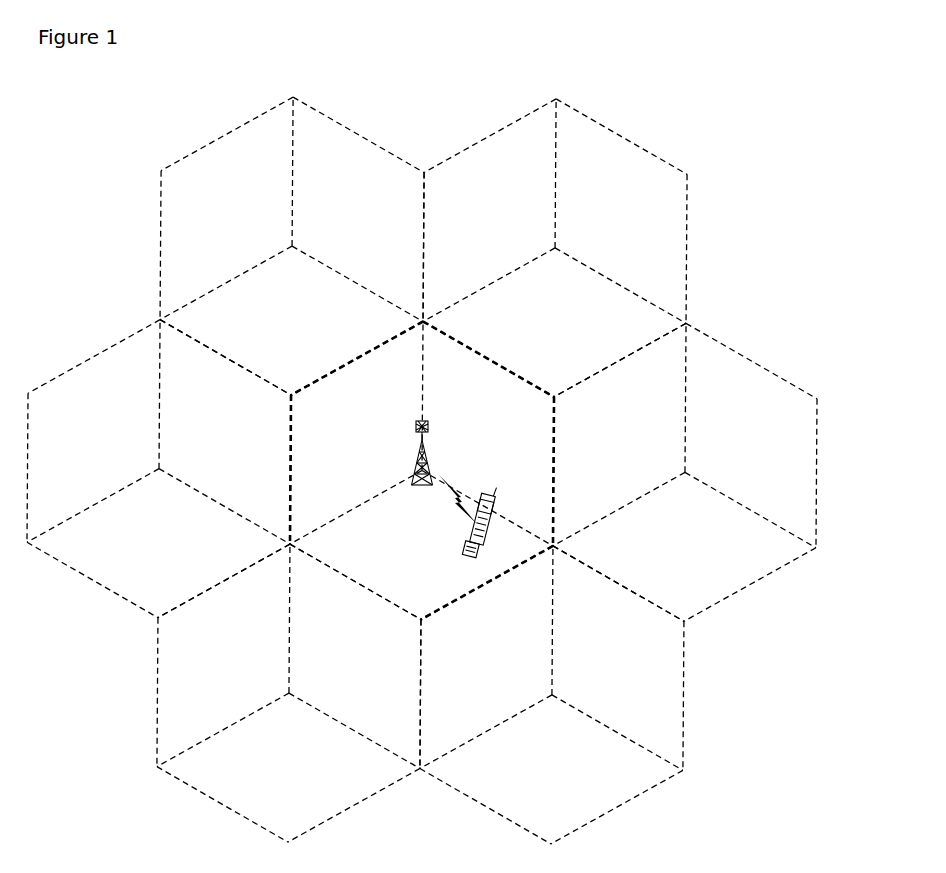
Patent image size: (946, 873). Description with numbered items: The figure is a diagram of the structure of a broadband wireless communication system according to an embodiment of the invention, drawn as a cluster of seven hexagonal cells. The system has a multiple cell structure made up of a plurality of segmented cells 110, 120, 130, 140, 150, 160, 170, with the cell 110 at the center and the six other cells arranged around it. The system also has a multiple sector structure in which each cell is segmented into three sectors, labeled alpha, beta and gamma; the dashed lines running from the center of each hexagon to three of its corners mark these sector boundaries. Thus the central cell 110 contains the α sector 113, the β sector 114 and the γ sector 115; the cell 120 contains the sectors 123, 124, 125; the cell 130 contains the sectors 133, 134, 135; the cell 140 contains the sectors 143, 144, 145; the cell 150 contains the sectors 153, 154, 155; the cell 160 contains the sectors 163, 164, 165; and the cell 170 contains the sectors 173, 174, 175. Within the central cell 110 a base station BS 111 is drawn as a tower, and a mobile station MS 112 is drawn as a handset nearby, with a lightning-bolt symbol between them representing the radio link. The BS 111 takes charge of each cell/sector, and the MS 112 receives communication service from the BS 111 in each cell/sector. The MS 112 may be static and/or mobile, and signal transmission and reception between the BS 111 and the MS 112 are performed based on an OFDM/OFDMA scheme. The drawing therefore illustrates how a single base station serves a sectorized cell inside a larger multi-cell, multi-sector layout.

The cell 110 is at (330, 376).
The cell 120 is at (628, 144).
The cell 130 is at (379, 149).
The cell 140 is at (116, 345).
The cell 150 is at (378, 790).
The cell 160 is at (686, 679).
The cell 170 is at (754, 363).
The BS 111 is at (426, 430).
The MS 112 is at (491, 497).
The α sector 113 is at (356, 447).
The β sector 114 is at (501, 439).
The γ sector 115 is at (414, 547).
The α sector 123 is at (493, 216).
The β sector 124 is at (632, 211).
The γ sector 125 is at (548, 320).
The α sector 133 is at (232, 212).
The β sector 134 is at (366, 209).
The γ sector 135 is at (289, 314).
The α sector 143 is at (95, 440).
The β sector 144 is at (234, 435).
The γ sector 145 is at (155, 545).
The α sector 153 is at (222, 660).
The β sector 154 is at (351, 654).
The γ sector 155 is at (298, 772).
The α sector 163 is at (490, 655).
The β sector 164 is at (624, 655).
The γ sector 165 is at (558, 780).
The α sector 173 is at (628, 433).
The β sector 174 is at (756, 440).
The γ sector 175 is at (690, 546).